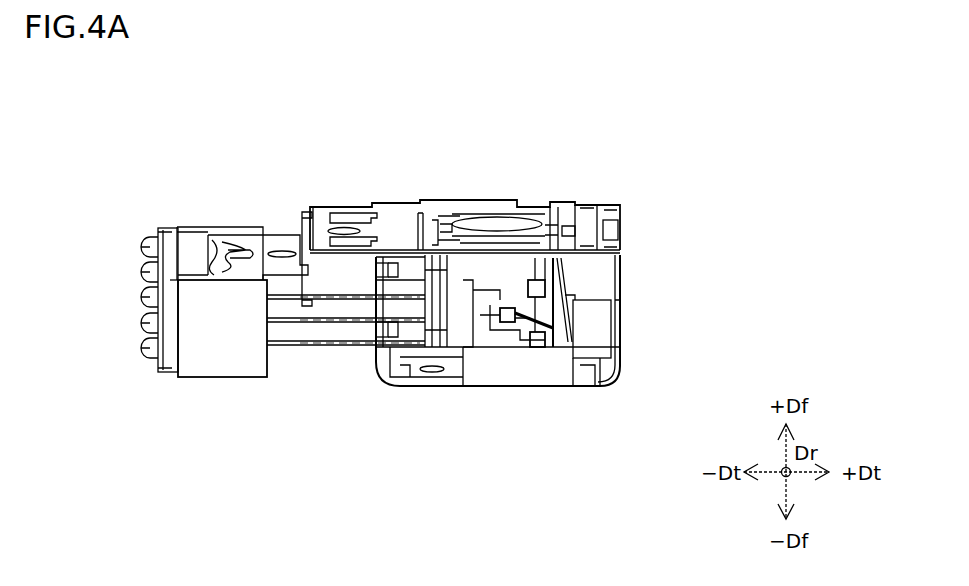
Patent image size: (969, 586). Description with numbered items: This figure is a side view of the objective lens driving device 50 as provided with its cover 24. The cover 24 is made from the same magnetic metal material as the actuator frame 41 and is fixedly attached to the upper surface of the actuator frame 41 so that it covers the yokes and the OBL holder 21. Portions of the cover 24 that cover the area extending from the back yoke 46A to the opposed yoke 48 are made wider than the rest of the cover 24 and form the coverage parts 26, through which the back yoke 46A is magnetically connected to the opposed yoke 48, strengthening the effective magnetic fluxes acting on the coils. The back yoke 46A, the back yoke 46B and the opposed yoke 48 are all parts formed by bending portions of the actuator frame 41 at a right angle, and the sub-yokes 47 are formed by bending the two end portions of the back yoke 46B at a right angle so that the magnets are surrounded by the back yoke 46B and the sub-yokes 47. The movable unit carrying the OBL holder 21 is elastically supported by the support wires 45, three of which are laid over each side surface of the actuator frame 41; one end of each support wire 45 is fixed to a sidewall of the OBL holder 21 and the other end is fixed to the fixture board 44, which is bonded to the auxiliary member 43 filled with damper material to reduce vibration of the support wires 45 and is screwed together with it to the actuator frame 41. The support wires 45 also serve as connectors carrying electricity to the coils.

The objective lens driving device 50 is at (422, 110).
The OBL holder 21 is at (540, 308).
The cover 24 is at (598, 210).
The coverage parts 26 is at (460, 218).
The actuator frame 41 is at (284, 245).
The auxiliary member 43 is at (228, 347).
The fixture board 44 is at (169, 376).
The support wires 45 is at (298, 357).
The back yoke 46A is at (390, 386).
The back yoke 46B is at (622, 330).
The sub-yokes 47 is at (588, 352).
The opposed yoke 48 is at (483, 360).